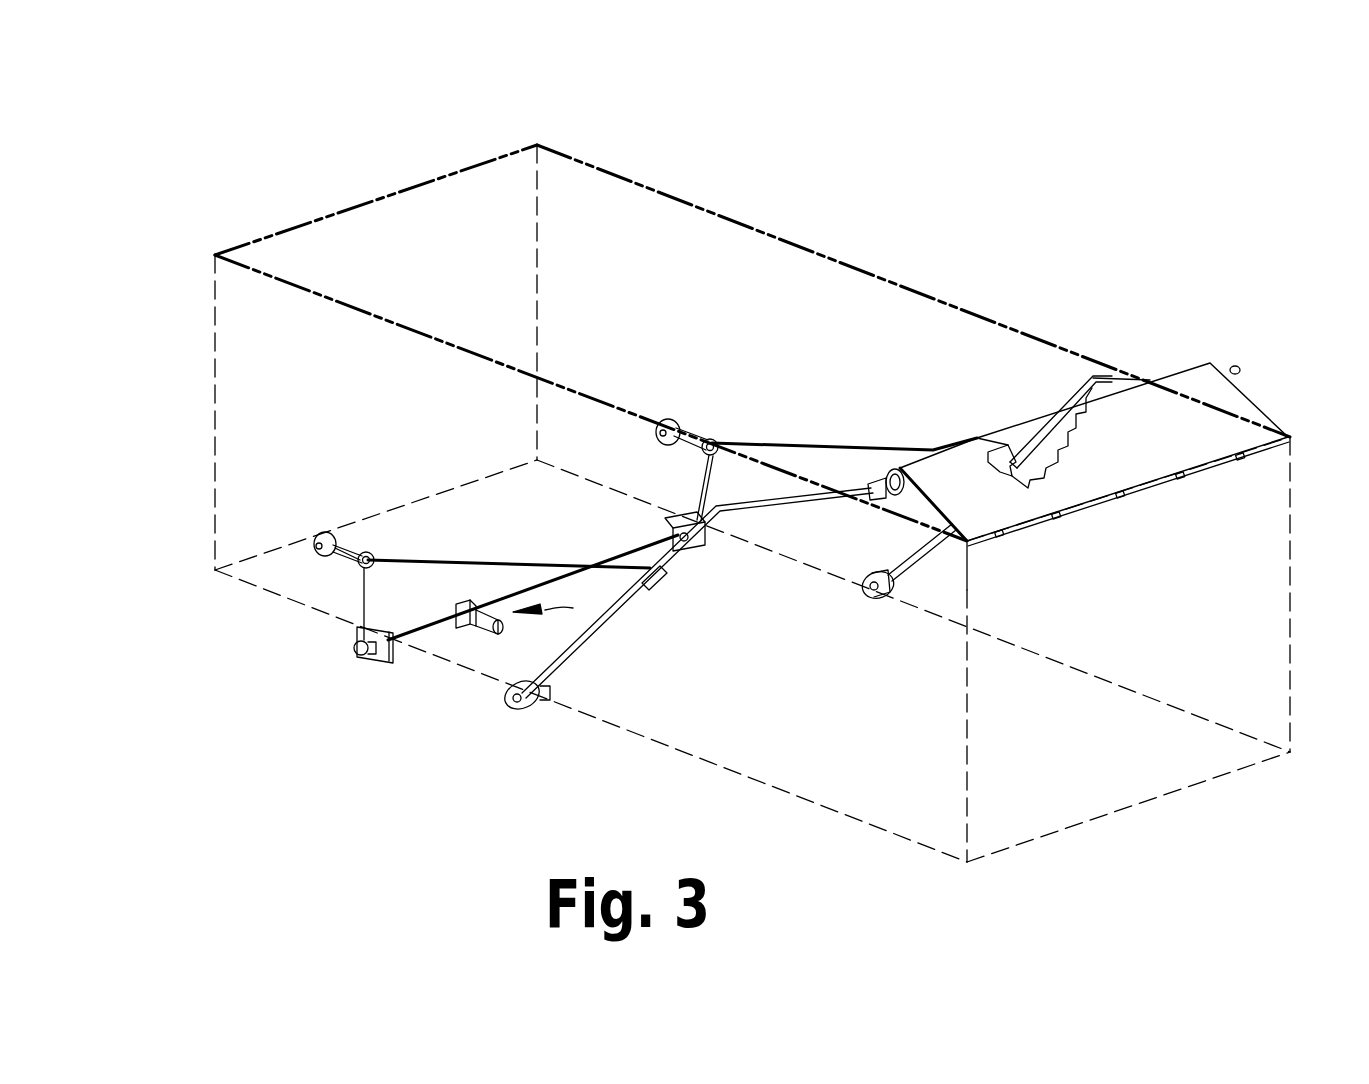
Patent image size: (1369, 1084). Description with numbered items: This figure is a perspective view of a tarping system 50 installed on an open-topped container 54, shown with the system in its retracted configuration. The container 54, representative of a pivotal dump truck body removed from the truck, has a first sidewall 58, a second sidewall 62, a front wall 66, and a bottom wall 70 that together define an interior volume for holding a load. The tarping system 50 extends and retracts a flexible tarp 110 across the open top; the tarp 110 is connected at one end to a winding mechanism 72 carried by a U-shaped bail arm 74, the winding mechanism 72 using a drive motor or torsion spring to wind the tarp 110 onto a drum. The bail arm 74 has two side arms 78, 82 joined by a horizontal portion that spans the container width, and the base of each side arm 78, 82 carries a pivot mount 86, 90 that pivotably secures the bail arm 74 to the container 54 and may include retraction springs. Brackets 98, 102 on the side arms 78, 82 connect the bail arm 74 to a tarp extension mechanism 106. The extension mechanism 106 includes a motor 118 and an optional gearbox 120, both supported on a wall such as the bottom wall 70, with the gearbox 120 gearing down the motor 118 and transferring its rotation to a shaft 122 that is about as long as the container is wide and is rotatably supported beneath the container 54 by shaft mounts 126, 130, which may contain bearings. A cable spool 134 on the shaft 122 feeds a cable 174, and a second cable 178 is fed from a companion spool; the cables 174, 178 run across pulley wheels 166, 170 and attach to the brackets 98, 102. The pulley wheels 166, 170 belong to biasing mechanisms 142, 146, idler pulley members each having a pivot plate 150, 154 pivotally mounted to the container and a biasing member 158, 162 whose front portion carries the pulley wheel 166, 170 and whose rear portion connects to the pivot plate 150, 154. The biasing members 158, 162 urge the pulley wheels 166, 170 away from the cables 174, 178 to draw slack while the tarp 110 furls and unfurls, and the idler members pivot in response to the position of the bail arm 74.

The tarping system 50 is at (893, 203).
The container 54 is at (313, 212).
The first sidewall 58 is at (242, 362).
The second sidewall 62 is at (625, 205).
The front wall 66 is at (1128, 742).
The bottom wall 70 is at (860, 825).
The winding mechanism 72 is at (920, 470).
The bail arm 74 is at (1118, 380).
The side arm 78 is at (610, 622).
The side arm 82 is at (1063, 405).
The pivot mount 86 is at (517, 704).
The pivot mount 90 is at (892, 590).
The bracket 98 is at (663, 578).
The bracket 102 is at (1010, 455).
The tarp extension mechanism 106 is at (557, 605).
The tarp 110 is at (1230, 418).
The motor 118 is at (492, 636).
The gearbox 120 is at (465, 607).
The shaft 122 is at (441, 630).
The shaft mount 126 is at (376, 659).
The shaft mount 130 is at (694, 521).
The cable spool 134 is at (356, 642).
The biasing mechanism 142 is at (322, 556).
The biasing mechanism 146 is at (706, 442).
The pivot plate 150 is at (330, 542).
The pivot plate 154 is at (666, 425).
The biasing member 158 is at (355, 548).
The biasing member 162 is at (702, 430).
The pulley wheel 166 is at (372, 566).
The pulley wheel 170 is at (718, 458).
The cable 174 is at (452, 560).
The cable 178 is at (820, 443).